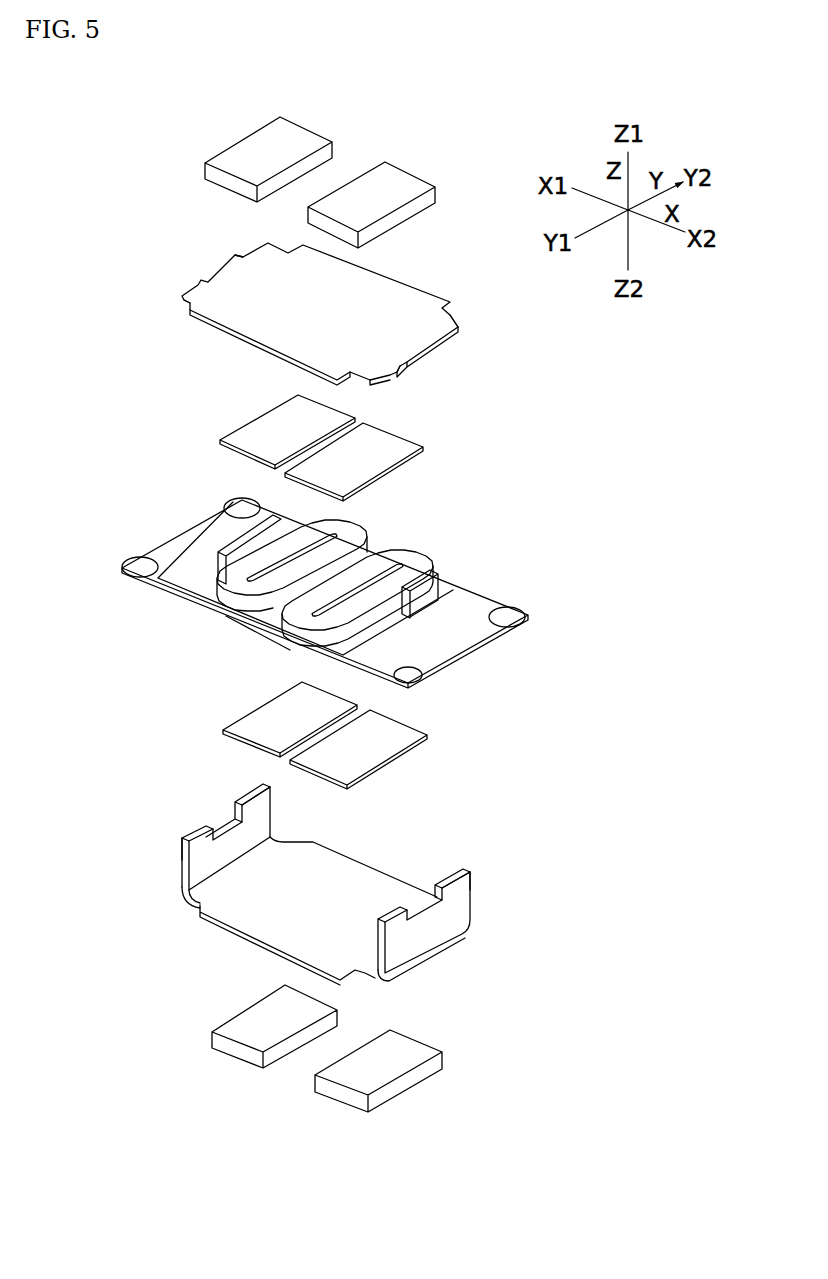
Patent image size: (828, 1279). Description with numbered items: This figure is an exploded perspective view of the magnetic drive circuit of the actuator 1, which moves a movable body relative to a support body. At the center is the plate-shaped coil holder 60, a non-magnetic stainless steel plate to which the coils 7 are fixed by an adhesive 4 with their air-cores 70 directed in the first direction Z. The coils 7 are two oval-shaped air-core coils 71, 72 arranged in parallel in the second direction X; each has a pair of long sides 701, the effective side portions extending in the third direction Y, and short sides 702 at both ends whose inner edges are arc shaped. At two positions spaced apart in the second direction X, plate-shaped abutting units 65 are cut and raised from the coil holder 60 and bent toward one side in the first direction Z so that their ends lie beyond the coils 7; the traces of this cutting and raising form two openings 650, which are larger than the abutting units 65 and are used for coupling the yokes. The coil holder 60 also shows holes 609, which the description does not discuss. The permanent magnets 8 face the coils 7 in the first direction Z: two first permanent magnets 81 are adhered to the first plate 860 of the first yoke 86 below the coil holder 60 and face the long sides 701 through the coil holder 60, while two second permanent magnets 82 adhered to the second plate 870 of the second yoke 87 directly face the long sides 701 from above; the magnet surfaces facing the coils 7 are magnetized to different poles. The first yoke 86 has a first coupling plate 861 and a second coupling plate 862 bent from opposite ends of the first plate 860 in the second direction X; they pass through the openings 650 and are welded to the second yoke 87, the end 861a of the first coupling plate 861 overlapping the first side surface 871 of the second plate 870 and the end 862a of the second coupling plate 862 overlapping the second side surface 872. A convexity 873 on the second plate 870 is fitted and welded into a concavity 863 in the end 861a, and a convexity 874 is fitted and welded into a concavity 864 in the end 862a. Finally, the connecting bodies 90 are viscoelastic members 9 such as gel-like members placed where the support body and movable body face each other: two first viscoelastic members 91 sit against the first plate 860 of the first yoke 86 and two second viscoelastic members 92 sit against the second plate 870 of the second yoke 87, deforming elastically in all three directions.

The actuator 1 is at (99, 206).
The adhesive 4 is at (225, 617).
The coil 7 is at (365, 580).
The permanent magnet 8 is at (336, 594).
The viscoelastic member 9 is at (323, 614).
The coil holder 60 is at (326, 584).
The abutting unit 65 is at (232, 549).
The air-core 70 is at (373, 562).
The coil 71 is at (358, 522).
The coil 72 is at (365, 597).
The first permanent magnet 81 is at (247, 727).
The second permanent magnet 82 is at (272, 418).
The first yoke 86 is at (329, 880).
The second yoke 87 is at (318, 322).
The connecting body 90 is at (323, 614).
The first viscoelastic member 91 is at (335, 1075).
The second viscoelastic member 92 is at (374, 178).
The hole 609 is at (242, 499).
The opening 650 is at (162, 592).
The long side 701 is at (356, 585).
The short side 702 is at (425, 552).
The first plate 860 is at (368, 880).
The first coupling plate 861 is at (193, 841).
The end 861a is at (182, 843).
The second coupling plate 862 is at (460, 904).
The end 862a is at (458, 870).
The concavity 863 is at (230, 823).
The concavity 864 is at (446, 903).
The second plate 870 is at (238, 318).
The first side surface 871 is at (200, 284).
The second side surface 872 is at (397, 369).
The convexity 873 is at (222, 270).
The convexity 874 is at (428, 347).